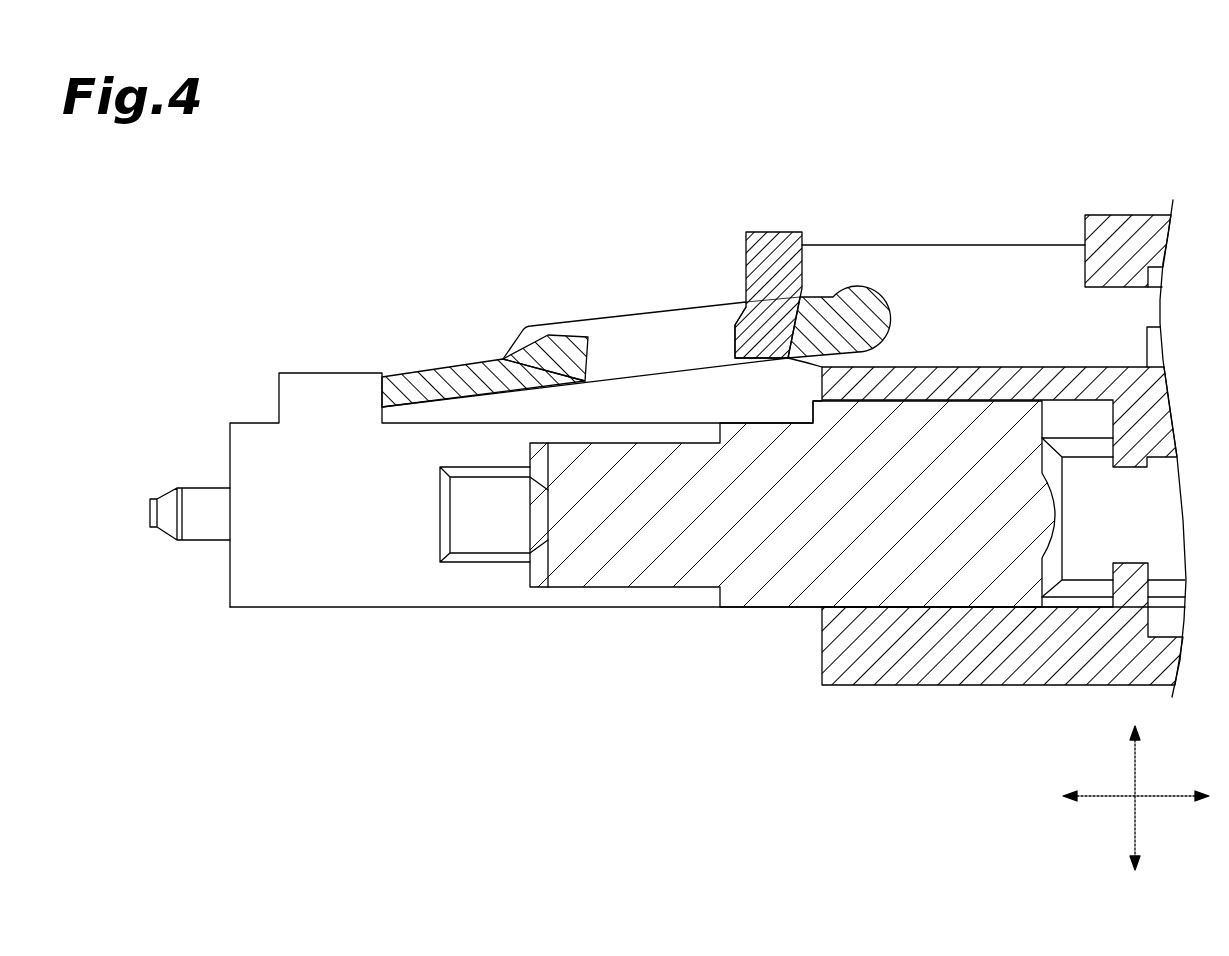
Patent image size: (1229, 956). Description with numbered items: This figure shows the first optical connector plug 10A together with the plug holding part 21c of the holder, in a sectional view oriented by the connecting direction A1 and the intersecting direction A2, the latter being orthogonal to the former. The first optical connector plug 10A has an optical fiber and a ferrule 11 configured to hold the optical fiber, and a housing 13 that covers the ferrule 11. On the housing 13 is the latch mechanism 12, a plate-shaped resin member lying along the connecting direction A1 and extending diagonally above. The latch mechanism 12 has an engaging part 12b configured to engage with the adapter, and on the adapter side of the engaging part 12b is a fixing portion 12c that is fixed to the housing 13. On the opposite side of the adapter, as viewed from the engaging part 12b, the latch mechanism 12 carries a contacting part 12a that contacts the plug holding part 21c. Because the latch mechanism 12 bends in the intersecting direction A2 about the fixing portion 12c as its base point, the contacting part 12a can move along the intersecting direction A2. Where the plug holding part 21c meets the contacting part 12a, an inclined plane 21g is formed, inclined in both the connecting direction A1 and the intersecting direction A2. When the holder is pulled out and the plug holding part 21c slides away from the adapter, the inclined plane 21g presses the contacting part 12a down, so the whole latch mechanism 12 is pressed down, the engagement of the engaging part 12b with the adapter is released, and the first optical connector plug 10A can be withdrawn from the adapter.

The first optical connector plug 10A is at (264, 310).
The ferrule 11 is at (200, 527).
The latch mechanism 12 is at (617, 308).
The contacting part 12a is at (800, 392).
The engaging part 12b is at (590, 352).
The fixing portion 12c is at (395, 388).
The housing 13 is at (380, 571).
The plug holding part 21c is at (779, 222).
The inclined plane 21g is at (772, 342).
The connecting direction A1 is at (1105, 800).
The intersecting direction A2 is at (1138, 773).